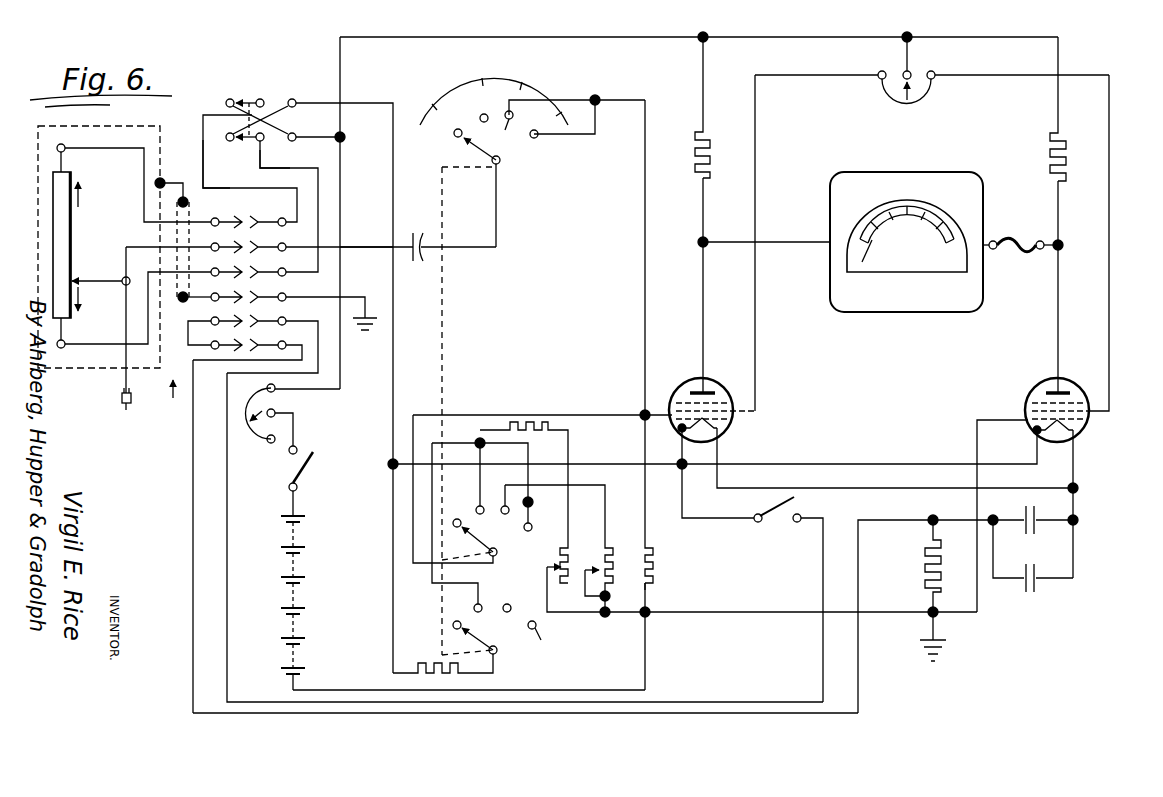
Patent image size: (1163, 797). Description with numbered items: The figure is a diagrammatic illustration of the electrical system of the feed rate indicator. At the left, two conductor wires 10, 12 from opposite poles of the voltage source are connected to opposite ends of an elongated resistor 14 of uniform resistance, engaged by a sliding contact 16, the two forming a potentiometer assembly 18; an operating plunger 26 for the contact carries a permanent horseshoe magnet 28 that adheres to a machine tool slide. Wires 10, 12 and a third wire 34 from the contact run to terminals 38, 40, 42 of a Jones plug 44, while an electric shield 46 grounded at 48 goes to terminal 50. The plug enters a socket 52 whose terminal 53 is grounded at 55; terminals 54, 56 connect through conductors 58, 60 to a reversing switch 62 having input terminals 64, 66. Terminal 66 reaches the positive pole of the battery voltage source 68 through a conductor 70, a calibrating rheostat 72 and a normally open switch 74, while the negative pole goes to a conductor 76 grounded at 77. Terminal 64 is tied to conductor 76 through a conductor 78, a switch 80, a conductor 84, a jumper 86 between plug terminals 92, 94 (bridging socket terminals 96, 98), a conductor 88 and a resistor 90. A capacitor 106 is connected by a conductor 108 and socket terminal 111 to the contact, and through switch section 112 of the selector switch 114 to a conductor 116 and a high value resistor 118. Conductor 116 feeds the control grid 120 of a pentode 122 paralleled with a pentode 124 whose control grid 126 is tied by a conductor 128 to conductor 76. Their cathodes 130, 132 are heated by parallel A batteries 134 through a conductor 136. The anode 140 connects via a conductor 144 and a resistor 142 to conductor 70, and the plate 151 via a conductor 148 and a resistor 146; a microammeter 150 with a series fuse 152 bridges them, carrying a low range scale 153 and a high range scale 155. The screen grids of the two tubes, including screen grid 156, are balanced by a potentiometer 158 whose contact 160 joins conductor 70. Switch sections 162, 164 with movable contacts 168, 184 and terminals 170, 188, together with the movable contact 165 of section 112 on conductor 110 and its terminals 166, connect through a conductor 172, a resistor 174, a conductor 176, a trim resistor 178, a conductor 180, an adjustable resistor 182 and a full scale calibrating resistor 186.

The conductor wire 10 is at (106, 148).
The conductor wire 12 is at (92, 344).
The elongated resistor 14 is at (58, 212).
The sliding contact 16 is at (74, 279).
The potentiometer assembly 18 is at (38, 183).
The operating plunger 26 is at (124, 388).
The permanent horseshoe magnet 28 is at (131, 407).
The third wire 34 is at (126, 247).
The plug terminal 38 is at (214, 218).
The plug terminal 40 is at (214, 243).
The plug terminal 42 is at (214, 268).
The Jones plug 44 is at (174, 399).
The electric shield 46 is at (184, 262).
The ground connection 48 is at (164, 178).
The plug terminal 50 is at (214, 293).
The socket 52 is at (280, 218).
The socket terminal 53 is at (285, 294).
The socket terminal 54 is at (279, 245).
The ground connection 55 is at (388, 294).
The socket terminal 56 is at (280, 268).
The conductor 58 is at (236, 169).
The conductor 60 is at (283, 176).
The reversing switch 62 is at (250, 98).
The input terminal 64 is at (294, 108).
The input terminal 66 is at (294, 142).
The voltage source 68 is at (288, 590).
The conductor 70 is at (342, 206).
The calibrating rheostat 72 is at (278, 400).
The normally open switch 74 is at (289, 468).
The conductor 76 is at (314, 698).
The ground 77 is at (918, 640).
The conductor 78 is at (393, 380).
The normally open switch 80 is at (780, 522).
The conductor 84 is at (230, 530).
The jumper 86 is at (188, 332).
The conductor 88 is at (192, 472).
The resistor 90 is at (924, 584).
The plug terminal 92 is at (213, 317).
The plug terminal 94 is at (213, 341).
The socket terminal 96 is at (285, 318).
The socket terminal 98 is at (285, 342).
The capacitor 106 is at (420, 266).
The conductor 108 is at (393, 262).
The conductor 110 is at (497, 225).
The socket terminal 111 is at (286, 249).
The switch section 112 is at (524, 156).
The selector switch 114 is at (450, 348).
The conductor 116 is at (645, 98).
The high value resistor 118 is at (650, 578).
The control grid 120 is at (722, 426).
The pentode 122 is at (690, 382).
The pentode 124 is at (1028, 385).
The control grid 126 is at (1080, 430).
The conductor 128 is at (970, 446).
The cathode 130 is at (718, 444).
The cathode 132 is at (1062, 440).
The A batteries 134 is at (1036, 536).
The conductor 136 is at (858, 520).
The anode 140 is at (704, 378).
The resistor 142 is at (712, 172).
The conductor 144 is at (702, 305).
The resistor 146 is at (1050, 155).
The conductor 148 is at (1058, 296).
The microammeter 150 is at (898, 312).
The plate 151 is at (1062, 380).
The series fuse 152 is at (1006, 242).
The low range scale 153 is at (858, 250).
The high range scale 155 is at (864, 262).
The screen grid 156 is at (1080, 410).
The potentiometer 158 is at (930, 100).
The adjustable contact 160 is at (918, 84).
The switch section 162 is at (508, 540).
The switch section 164 is at (538, 670).
The movable contact 165 is at (482, 146).
The switch terminals 166 is at (586, 157).
The movable contact 168 is at (476, 542).
The switch terminals 170 is at (536, 520).
The conductor 172 is at (528, 456).
The resistor 174 is at (524, 422).
The conductor 176 is at (568, 474).
The adjustable trim resistor 178 is at (588, 540).
The conductor 180 is at (608, 508).
The adjustable resistor 182 is at (648, 528).
The movable contact 184 is at (481, 644).
The full scale calibrating resistor 186 is at (460, 676).
The switch terminal 188 is at (520, 602).